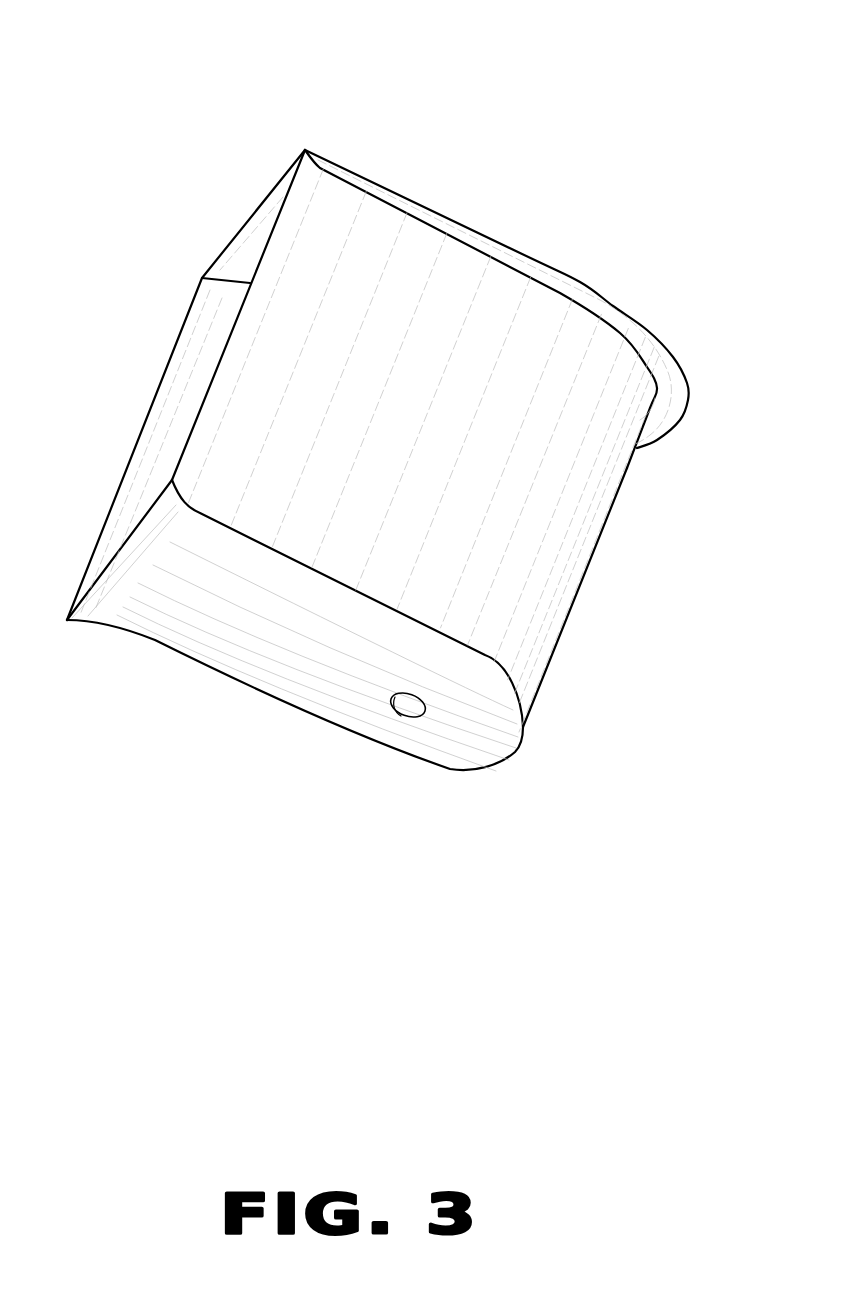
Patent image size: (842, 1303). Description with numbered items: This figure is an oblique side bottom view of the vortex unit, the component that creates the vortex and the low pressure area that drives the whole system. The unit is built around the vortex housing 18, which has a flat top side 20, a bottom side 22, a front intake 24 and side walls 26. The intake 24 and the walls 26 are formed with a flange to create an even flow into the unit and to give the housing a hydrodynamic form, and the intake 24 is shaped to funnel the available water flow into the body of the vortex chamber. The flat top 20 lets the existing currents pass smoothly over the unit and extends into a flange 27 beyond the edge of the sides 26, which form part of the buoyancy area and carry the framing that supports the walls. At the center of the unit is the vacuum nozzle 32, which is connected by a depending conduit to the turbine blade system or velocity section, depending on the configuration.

The vortex housing 18 is at (408, 196).
The top side 20 is at (533, 261).
The bottom side 22 is at (263, 652).
The intake 24 is at (208, 355).
The wall 26 is at (495, 542).
The flange 27 is at (663, 402).
The vacuum nozzle 32 is at (408, 707).